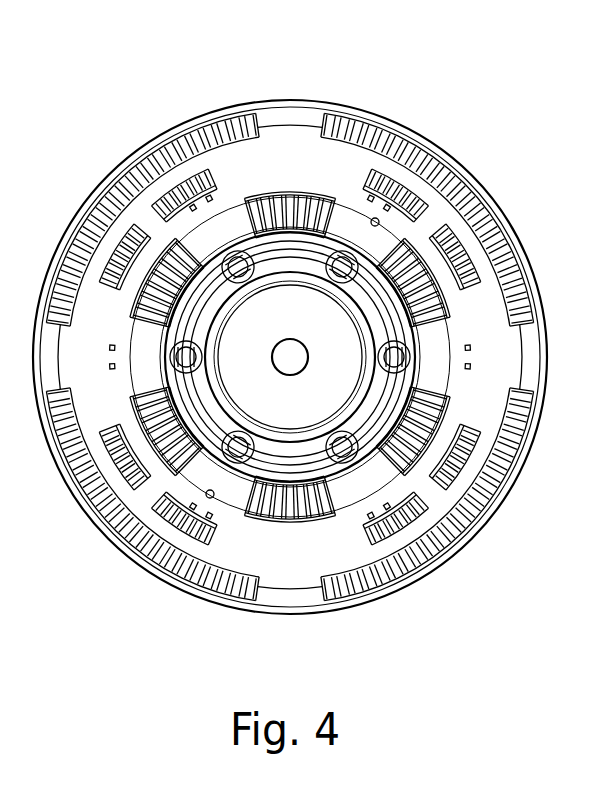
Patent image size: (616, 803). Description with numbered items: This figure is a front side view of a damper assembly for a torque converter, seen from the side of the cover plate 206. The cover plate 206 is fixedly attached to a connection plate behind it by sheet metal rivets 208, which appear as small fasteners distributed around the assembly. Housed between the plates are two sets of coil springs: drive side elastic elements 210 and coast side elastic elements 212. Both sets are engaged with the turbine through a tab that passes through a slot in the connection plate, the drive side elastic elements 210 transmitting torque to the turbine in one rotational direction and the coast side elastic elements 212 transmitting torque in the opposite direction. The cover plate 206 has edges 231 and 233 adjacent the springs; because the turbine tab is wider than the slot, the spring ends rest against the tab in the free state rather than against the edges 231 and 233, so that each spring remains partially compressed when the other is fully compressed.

The cover plate 206 is at (320, 172).
The sheet metal rivets 208 is at (470, 337).
The drive side elastic elements 210 is at (494, 214).
The coast side elastic elements 212 is at (392, 173).
The edge of plate 231 is at (463, 200).
The edge of plate 233 is at (427, 200).